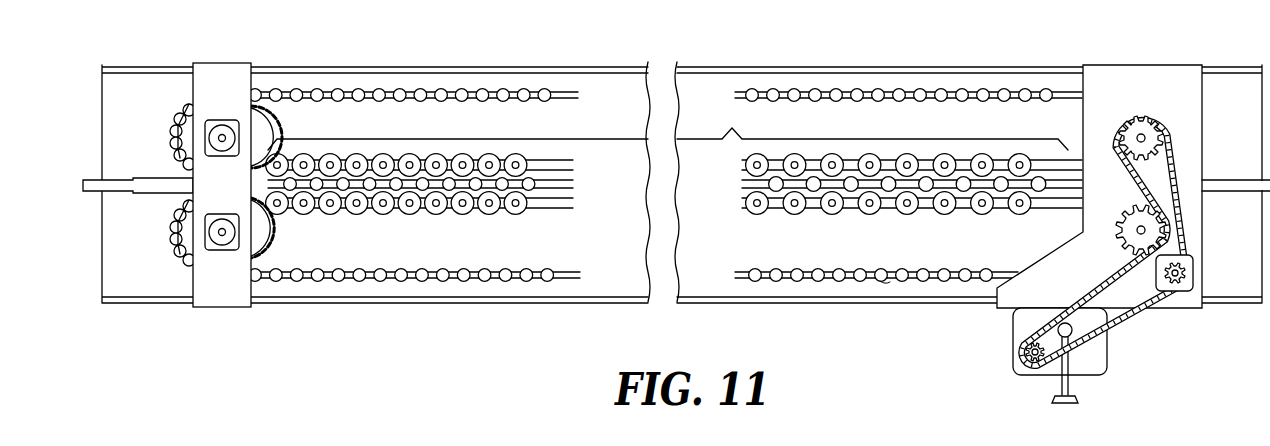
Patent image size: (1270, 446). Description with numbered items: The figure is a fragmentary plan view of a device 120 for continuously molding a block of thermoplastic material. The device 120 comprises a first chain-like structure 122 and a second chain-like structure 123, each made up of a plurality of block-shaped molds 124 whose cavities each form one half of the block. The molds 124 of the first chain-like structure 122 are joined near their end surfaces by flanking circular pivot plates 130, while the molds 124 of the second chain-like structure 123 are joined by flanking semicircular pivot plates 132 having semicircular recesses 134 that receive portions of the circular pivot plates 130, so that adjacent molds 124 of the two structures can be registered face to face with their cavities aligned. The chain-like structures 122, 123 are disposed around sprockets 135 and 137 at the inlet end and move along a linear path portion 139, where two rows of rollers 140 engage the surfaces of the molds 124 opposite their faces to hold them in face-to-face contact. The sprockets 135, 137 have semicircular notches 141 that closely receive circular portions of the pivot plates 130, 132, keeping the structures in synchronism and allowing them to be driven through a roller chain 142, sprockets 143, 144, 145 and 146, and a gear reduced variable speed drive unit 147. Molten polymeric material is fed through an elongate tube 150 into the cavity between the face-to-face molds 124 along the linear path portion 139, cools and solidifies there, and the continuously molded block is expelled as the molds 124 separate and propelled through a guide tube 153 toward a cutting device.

The device 120 is at (678, 48).
The first chain-like structure 122 is at (865, 90).
The second chain-like structure 123 is at (825, 282).
The mold 124 is at (942, 183).
The circular pivot plate 130 is at (817, 88).
The semicircular pivot plate 132 is at (760, 284).
The semicircular recess 134 is at (882, 284).
The sprocket 135 is at (186, 118).
The sprocket 137 is at (182, 235).
The linear path portion 139 is at (872, 126).
The roller 140 is at (550, 162).
The semicircular notch 141 is at (264, 125).
The roller chain 142 is at (1182, 175).
The sprocket 143 is at (1152, 128).
The sprocket 144 is at (1186, 272).
The sprocket 145 is at (1028, 355).
The sprocket 146 is at (1126, 241).
The gear reduced variable speed drive unit 147 is at (1028, 374).
The elongate tube 150 is at (145, 178).
The guide tube 153 is at (1238, 192).